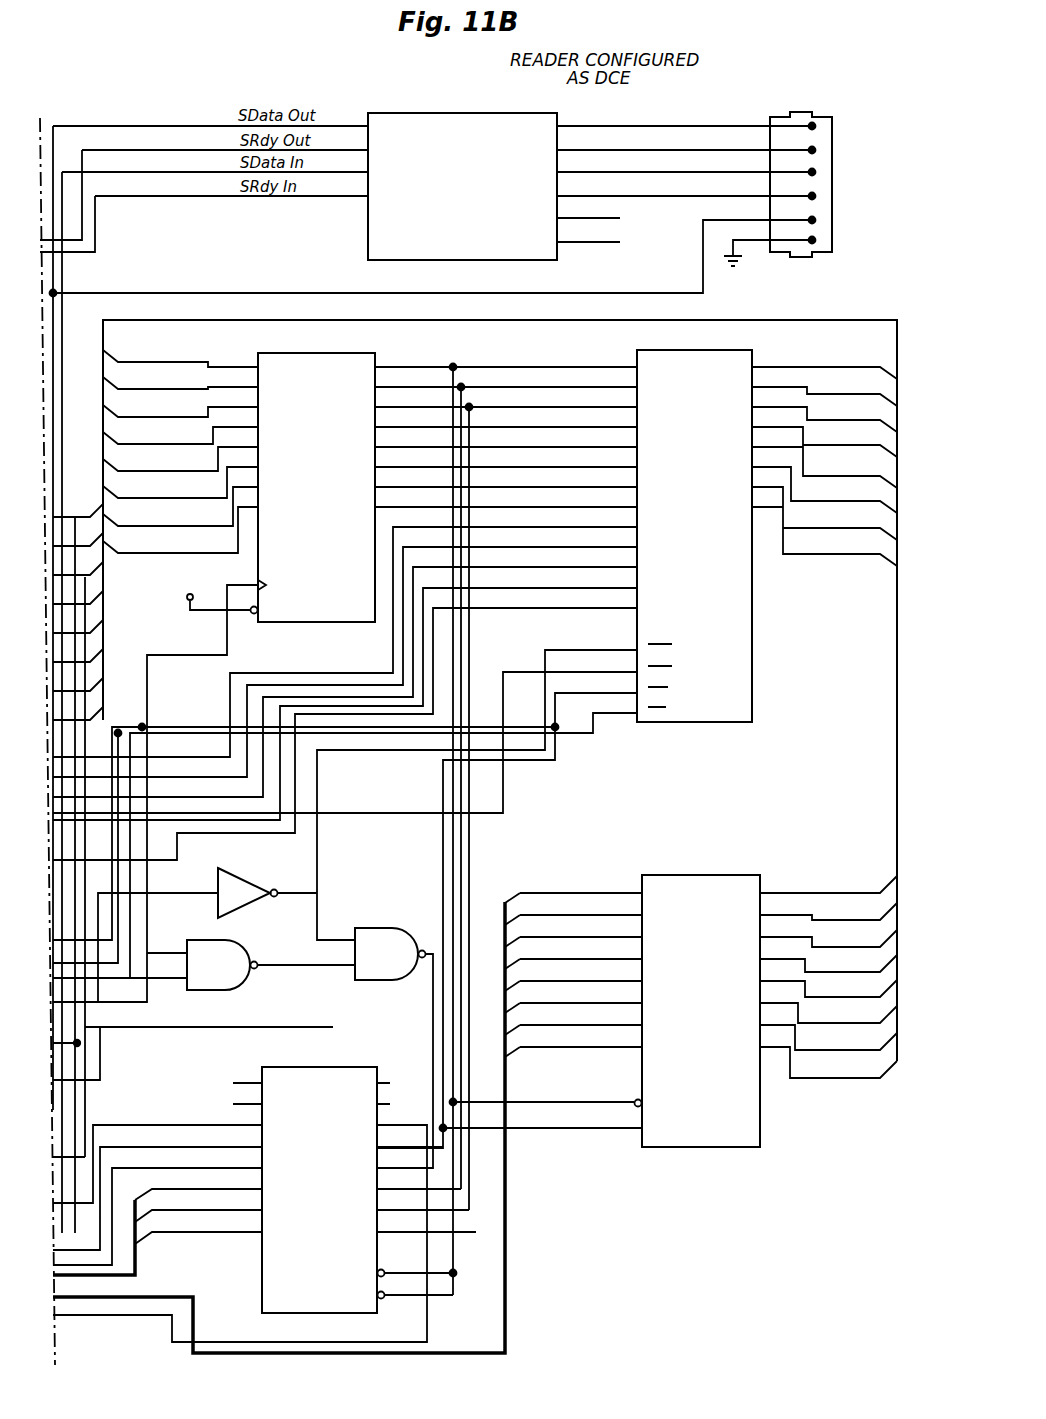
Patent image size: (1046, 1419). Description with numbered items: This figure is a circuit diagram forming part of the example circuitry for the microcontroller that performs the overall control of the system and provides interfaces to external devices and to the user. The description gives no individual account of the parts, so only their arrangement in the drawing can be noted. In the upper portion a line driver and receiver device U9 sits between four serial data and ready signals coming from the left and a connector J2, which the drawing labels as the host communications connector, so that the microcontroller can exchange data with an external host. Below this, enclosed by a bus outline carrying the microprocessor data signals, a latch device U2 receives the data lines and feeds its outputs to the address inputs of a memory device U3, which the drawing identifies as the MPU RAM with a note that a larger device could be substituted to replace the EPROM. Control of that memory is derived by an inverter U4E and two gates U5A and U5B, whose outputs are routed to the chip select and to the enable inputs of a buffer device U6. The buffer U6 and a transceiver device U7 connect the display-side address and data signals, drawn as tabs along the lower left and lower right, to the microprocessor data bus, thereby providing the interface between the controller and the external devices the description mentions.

The NM232CD RS-232 driver/receiver U9 is at (581, 188).
The host comms connector J2 is at (809, 201).
The 74HC273 octal D flip-flop U2 is at (345, 813).
The GR881 8Kx8 NVRAM (MPU RAM) U3 is at (475, 738).
The 74HC04 inverter U4E is at (207, 924).
The 74HC00 NAND gate U5A is at (242, 966).
The 74HC00 NAND gate U5B is at (388, 1036).
The 74HC244 octal buffer U6 is at (264, 1193).
The octal bus transceiver U7 is at (475, 1103).